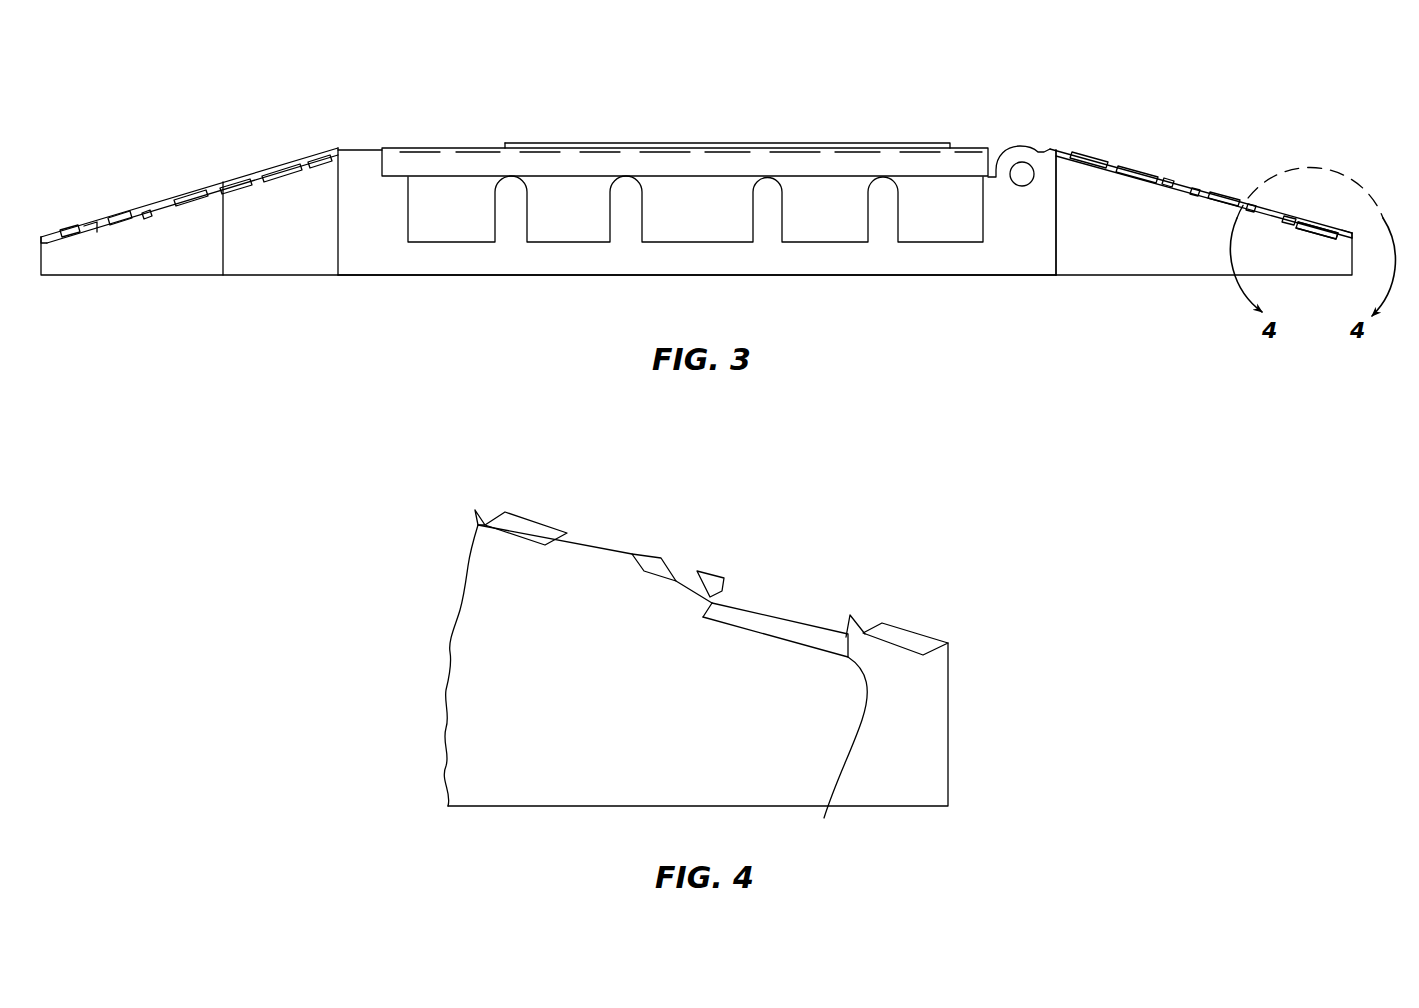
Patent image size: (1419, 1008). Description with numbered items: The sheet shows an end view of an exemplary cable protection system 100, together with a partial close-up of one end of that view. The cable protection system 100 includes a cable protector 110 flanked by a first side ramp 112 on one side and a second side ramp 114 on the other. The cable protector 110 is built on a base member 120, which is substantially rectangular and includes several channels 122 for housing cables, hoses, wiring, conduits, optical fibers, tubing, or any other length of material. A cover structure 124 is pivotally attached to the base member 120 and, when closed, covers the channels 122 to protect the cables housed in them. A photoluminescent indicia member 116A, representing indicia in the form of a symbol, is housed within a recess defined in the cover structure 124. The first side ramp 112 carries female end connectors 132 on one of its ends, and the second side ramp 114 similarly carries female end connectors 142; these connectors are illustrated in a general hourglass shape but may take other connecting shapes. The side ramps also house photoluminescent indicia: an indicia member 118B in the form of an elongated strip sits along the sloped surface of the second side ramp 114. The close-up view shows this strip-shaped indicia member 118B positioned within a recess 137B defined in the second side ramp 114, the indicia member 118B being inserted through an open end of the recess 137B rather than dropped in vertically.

In FIG. 3, the cable protection system 100 is at (1133, 101).
In FIG. 3, the cable protector 110 is at (510, 277).
In FIG. 3, the first side ramp 112 is at (140, 277).
In FIG. 3, the second side ramp 114 is at (1145, 277).
In FIG. 4, the second side ramp 114 is at (960, 695).
In FIG. 3, the indicia member 116A is at (684, 146).
In FIG. 3, the indicia member 118B is at (1315, 224).
In FIG. 4, the indicia member 118B is at (766, 623).
In FIG. 3, the base member 120 is at (625, 275).
In FIG. 3, the channels 122 is at (712, 227).
In FIG. 3, the cover structure 124 is at (458, 149).
In FIG. 3, the female end connectors 132 is at (1076, 262).
In FIG. 3, the female end connectors 142 is at (280, 266).
In FIG. 4, the recess 137B is at (824, 818).